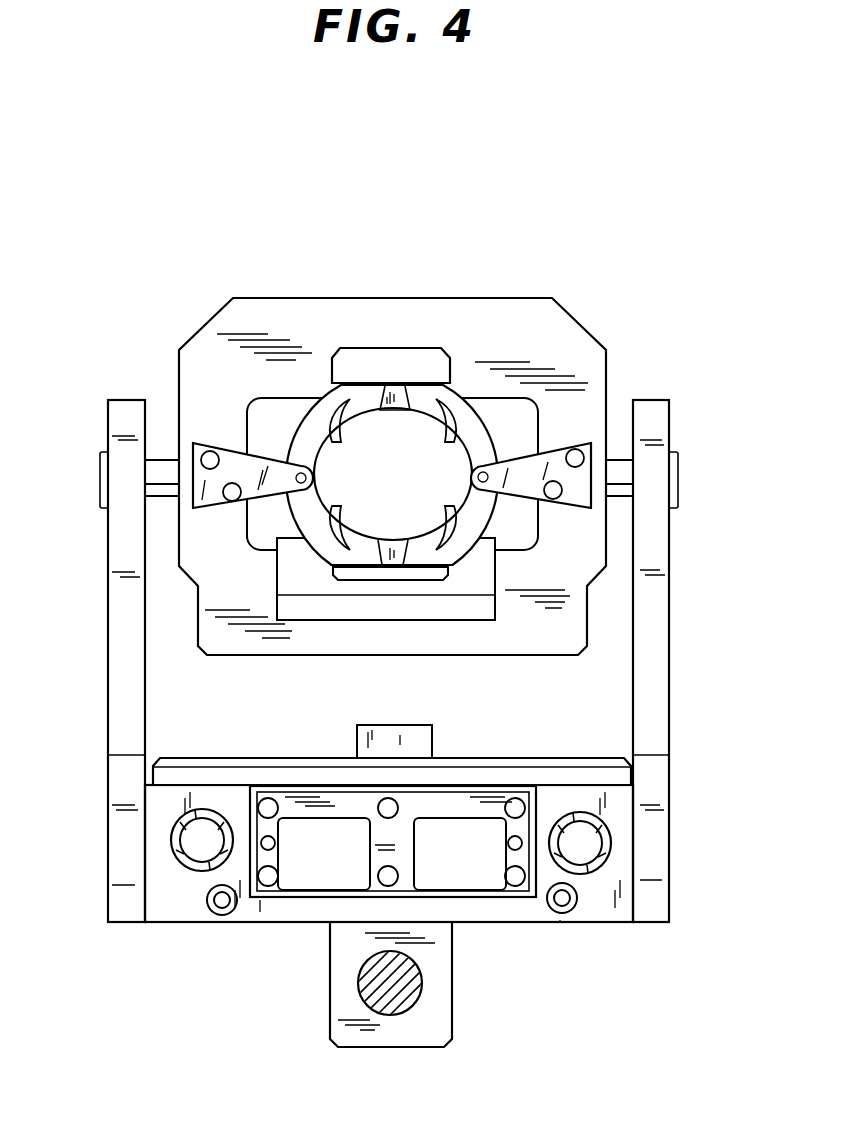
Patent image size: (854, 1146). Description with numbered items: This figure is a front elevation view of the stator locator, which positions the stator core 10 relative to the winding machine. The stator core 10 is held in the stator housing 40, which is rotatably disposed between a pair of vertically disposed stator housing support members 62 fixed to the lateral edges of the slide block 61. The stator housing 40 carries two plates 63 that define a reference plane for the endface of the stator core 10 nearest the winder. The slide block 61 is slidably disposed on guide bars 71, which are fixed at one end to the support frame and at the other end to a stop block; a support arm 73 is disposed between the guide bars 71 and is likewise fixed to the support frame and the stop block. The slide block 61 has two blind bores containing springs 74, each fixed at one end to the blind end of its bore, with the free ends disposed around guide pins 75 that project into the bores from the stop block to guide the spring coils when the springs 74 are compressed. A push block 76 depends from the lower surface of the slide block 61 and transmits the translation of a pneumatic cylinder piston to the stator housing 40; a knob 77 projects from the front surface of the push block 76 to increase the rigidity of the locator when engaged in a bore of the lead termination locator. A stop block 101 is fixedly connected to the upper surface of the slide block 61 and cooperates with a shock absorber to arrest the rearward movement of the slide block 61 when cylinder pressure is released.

The stator core 10 is at (453, 392).
The stator housing 40 is at (517, 297).
The plates 63 is at (547, 443).
The stator housing support members 62 is at (108, 568).
The stop block 101 is at (432, 738).
The support arm 73 is at (328, 818).
The guide bars 71 is at (183, 867).
The springs 74 is at (235, 907).
The guide pins 75 is at (217, 913).
The slide block 61 is at (597, 900).
The push block 76 is at (452, 1035).
The knob 77 is at (388, 998).